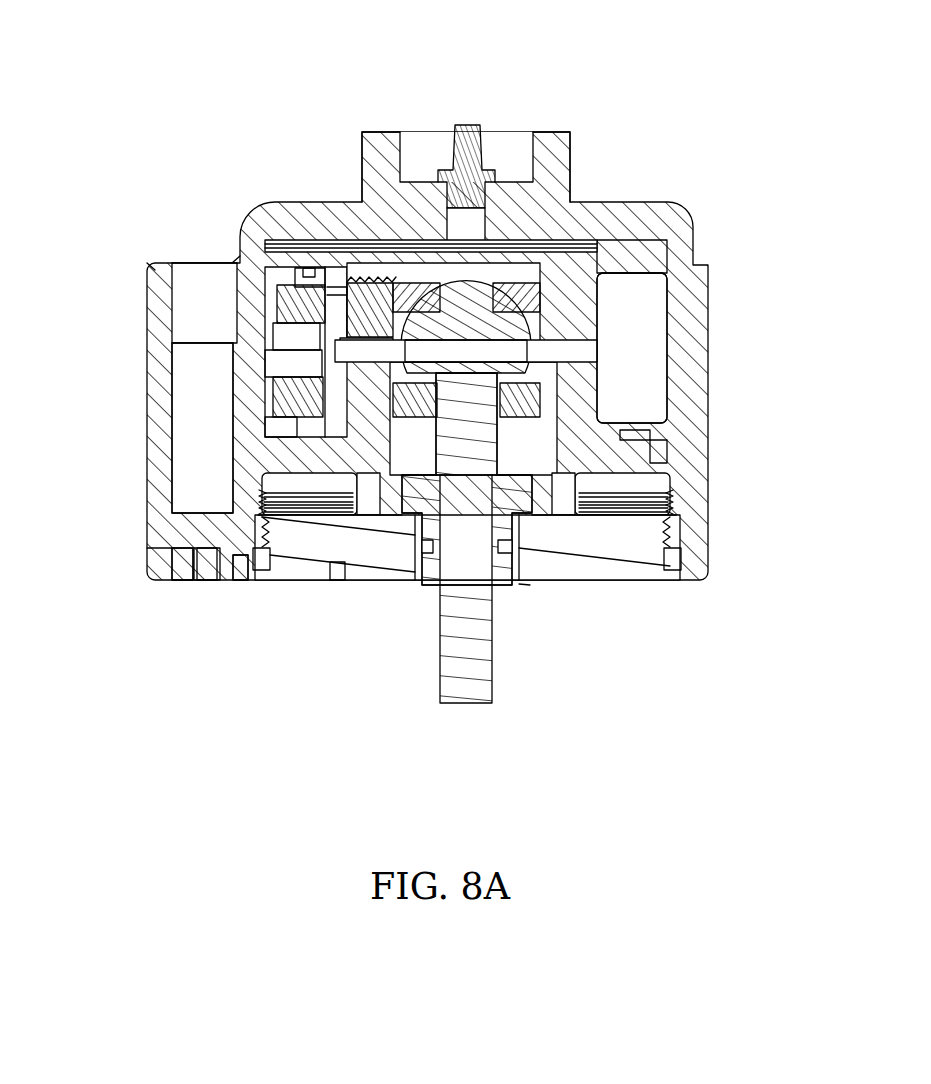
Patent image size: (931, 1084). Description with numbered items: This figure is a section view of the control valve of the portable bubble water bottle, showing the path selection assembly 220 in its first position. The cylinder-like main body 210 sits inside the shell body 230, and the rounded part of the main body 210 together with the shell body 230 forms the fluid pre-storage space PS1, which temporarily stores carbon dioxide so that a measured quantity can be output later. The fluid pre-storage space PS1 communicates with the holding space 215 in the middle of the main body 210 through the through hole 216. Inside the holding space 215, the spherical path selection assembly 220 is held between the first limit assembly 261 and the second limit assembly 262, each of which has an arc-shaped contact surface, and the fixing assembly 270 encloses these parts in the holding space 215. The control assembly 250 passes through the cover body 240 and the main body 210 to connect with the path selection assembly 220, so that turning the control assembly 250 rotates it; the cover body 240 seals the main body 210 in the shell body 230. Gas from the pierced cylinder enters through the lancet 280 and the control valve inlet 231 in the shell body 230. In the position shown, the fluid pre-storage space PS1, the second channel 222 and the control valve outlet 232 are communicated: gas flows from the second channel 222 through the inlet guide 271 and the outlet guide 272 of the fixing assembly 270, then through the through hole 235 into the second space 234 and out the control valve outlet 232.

The main body 210 is at (387, 270).
The holding space 215 is at (455, 287).
The through hole 216 is at (568, 355).
The path selection assembly 220 is at (483, 310).
The second channel 222 is at (547, 370).
The shell body 230 is at (700, 265).
The control valve inlet 231 is at (470, 130).
The control valve outlet 232 is at (200, 252).
The second space 234 is at (200, 413).
The through hole 235 is at (250, 492).
The cover body 240 is at (318, 553).
The control assembly 250 is at (483, 667).
The first limit assembly 261 is at (372, 350).
The second limit assembly 262 is at (598, 487).
The fixing assembly 270 is at (283, 312).
The inlet guide 271 is at (285, 268).
The outlet guide 272 is at (333, 345).
The lancet 280 is at (487, 153).
The fluid pre-storage space PS1 is at (635, 323).